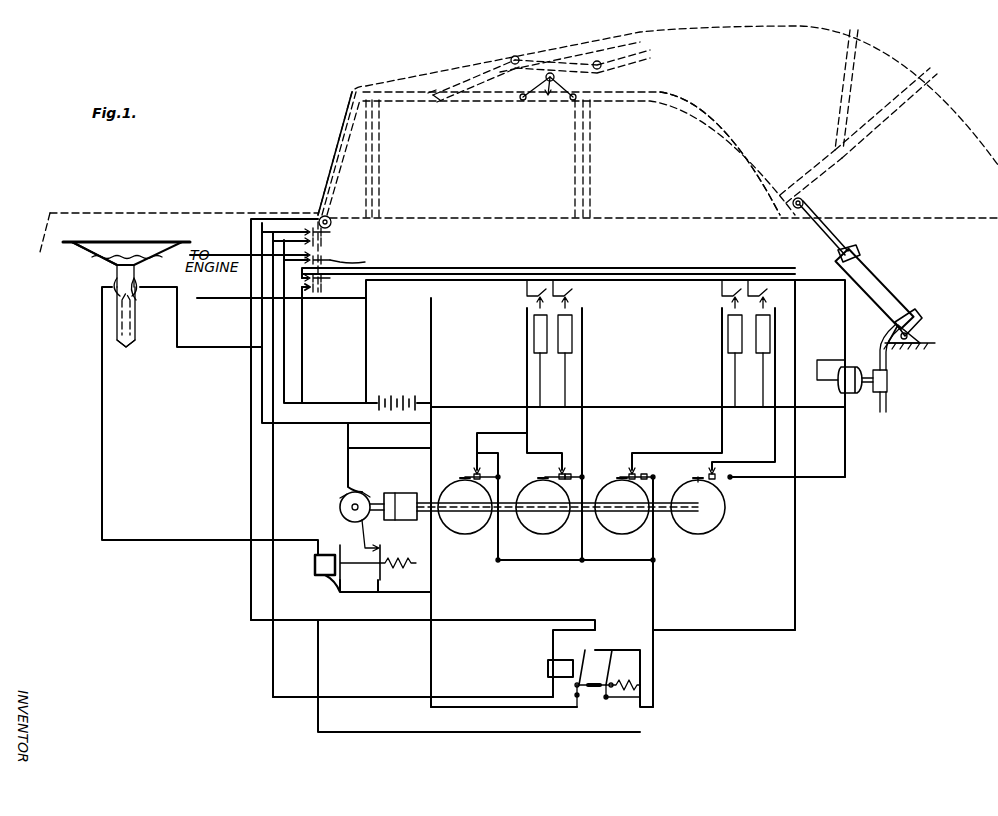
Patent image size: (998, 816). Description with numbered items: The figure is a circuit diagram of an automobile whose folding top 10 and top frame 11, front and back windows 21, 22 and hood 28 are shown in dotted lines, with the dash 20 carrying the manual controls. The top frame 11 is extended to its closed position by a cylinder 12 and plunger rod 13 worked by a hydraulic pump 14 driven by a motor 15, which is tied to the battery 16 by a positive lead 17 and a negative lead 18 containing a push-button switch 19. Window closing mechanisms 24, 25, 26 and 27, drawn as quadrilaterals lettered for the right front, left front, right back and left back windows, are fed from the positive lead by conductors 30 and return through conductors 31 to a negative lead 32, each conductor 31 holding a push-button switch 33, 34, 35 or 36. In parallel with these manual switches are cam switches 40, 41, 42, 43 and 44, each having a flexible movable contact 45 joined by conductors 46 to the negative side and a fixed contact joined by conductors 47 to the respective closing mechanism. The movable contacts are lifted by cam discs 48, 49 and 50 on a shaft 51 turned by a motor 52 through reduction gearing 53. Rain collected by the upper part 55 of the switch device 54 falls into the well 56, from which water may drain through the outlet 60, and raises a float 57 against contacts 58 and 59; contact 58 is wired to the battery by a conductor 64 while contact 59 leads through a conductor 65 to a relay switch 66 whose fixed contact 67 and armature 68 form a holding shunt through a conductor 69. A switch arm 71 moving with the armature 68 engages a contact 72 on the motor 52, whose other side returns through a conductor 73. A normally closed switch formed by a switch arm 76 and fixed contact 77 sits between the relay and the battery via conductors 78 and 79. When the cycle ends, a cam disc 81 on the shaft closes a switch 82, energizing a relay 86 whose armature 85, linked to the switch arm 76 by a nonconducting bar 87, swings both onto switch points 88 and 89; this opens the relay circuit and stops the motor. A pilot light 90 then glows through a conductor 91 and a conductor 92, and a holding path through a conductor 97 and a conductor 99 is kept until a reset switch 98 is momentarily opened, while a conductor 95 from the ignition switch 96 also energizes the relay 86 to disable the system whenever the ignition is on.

The folding top 10 is at (452, 70).
The top frame 11 is at (546, 102).
The cylinder 12 is at (888, 288).
The plunger rod 13 is at (826, 240).
The hydraulic pump 14 is at (888, 382).
The motor 15 is at (850, 395).
The battery 16 is at (403, 398).
The lead 17 is at (650, 406).
The lead 18 is at (657, 274).
The switch 19 is at (308, 296).
The dash 20 is at (328, 244).
The front windows 21 is at (345, 120).
The back windows 22 is at (705, 137).
The closing mechanism 24 is at (533, 330).
The closing mechanism 25 is at (573, 333).
The closing mechanism 26 is at (727, 333).
The closing mechanism 27 is at (771, 330).
The hood 28 is at (185, 240).
The conductors 30 is at (562, 383).
The conductors 31 is at (537, 303).
The negative lead 32 is at (465, 284).
The switch 33 is at (530, 276).
The switch 34 is at (566, 290).
The switch 35 is at (736, 276).
The switch 36 is at (762, 290).
The switch 40 is at (470, 474).
The switch 41 is at (556, 476).
The switch 42 is at (612, 468).
The switch 43 is at (626, 470).
The switch 44 is at (652, 470).
The movable contact 45 is at (480, 485).
The conductors 46 is at (380, 450).
The conductors 47 is at (570, 420).
The cam disc 48 is at (448, 518).
The cam disc 49 is at (526, 520).
The cam disc 50 is at (606, 520).
The shaft 51 is at (508, 514).
The motor 52 is at (340, 502).
The reduction gearing 53 is at (402, 492).
The switch device 54 is at (96, 258).
The rain collector 55 is at (104, 240).
The well 56 is at (136, 318).
The float 57 is at (120, 318).
The contact 58 is at (138, 284).
The contact 59 is at (115, 282).
The drain 60 is at (128, 340).
The conductor 64 is at (262, 362).
The conductor 65 is at (102, 458).
The relay switch 66 is at (314, 570).
The fixed contact 67 is at (320, 540).
The armature 68 is at (350, 596).
The conductor 69 is at (390, 620).
The switch arm 71 is at (382, 575).
The contact 72 is at (379, 546).
The conductor 73 is at (348, 468).
The switch arm 76 is at (614, 672).
The fixed contact 77 is at (620, 650).
The conductor 78 is at (564, 732).
The conductor 79 is at (654, 590).
The cam disc 81 is at (699, 534).
The switch 82 is at (716, 474).
The armature 85 is at (594, 673).
The relay 86 is at (548, 668).
The nonconducting bar 87 is at (590, 690).
The switch point 88 is at (606, 646).
The switch point 89 is at (581, 646).
The pilot light 90 is at (322, 212).
The conductor 91 is at (251, 456).
The conductor 92 is at (251, 236).
The conductor 95 is at (462, 272).
The ignition switch 96 is at (358, 255).
The conductor 97 is at (273, 487).
The reset switch 98 is at (330, 226).
The conductor 99 is at (302, 352).